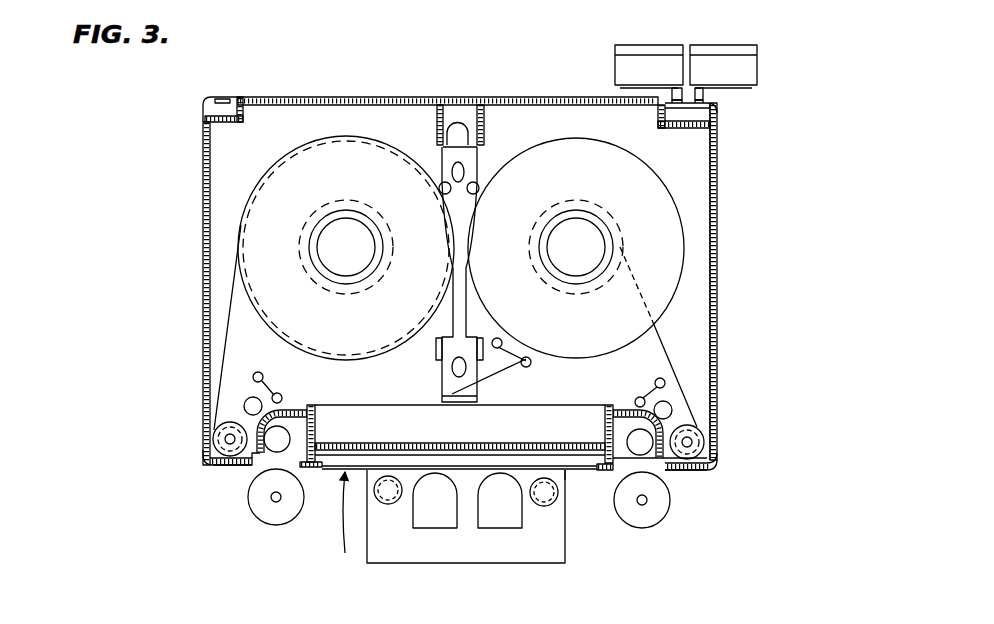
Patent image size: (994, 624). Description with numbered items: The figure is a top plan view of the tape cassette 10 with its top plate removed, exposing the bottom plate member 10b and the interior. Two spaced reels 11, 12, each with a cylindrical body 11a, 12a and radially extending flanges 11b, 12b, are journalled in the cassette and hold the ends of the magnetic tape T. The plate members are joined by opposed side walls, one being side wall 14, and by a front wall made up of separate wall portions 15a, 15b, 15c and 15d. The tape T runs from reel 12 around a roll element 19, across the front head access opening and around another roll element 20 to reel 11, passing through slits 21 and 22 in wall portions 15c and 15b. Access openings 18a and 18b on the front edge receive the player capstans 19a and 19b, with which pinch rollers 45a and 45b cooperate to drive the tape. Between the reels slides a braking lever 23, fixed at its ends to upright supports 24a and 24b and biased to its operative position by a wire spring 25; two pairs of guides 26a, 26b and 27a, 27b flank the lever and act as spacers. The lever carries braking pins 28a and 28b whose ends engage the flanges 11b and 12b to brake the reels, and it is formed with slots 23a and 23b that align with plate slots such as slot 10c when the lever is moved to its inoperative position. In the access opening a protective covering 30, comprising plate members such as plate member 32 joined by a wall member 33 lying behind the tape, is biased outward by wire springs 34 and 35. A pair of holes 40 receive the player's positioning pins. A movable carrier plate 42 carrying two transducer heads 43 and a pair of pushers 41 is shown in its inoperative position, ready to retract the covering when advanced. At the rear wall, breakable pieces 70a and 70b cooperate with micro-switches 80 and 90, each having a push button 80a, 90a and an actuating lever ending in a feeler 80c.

The cassette 10 is at (723, 173).
The bottom plate member 10b is at (403, 127).
The slot 10c is at (459, 122).
The reel 11 is at (670, 243).
The cylindrical body 11a is at (593, 206).
The flanges 11b is at (673, 204).
The reel 12 is at (256, 228).
The cylindrical body 12a is at (327, 207).
The flanges 12b is at (256, 183).
The side wall 14 is at (714, 267).
The magnetic tape T is at (658, 343).
The front wall portion 15a is at (695, 470).
The front wall portion 15b is at (604, 470).
The front wall portion 15c is at (312, 470).
The front wall portion 15d is at (228, 465).
The access opening 18a is at (670, 502).
The access opening 18b is at (262, 462).
The roll element 19 is at (214, 439).
The capstan 19a is at (638, 440).
The capstan 19b is at (278, 438).
The roll element 20 is at (707, 448).
The slit 21 is at (300, 462).
The slit 22 is at (632, 487).
The braking lever 23 is at (464, 215).
The slot 23a is at (473, 150).
The slot 23b is at (462, 355).
The upright support 24a is at (459, 404).
The upright support 24b is at (484, 125).
The wire spring 25 is at (523, 367).
The guide 26a is at (450, 150).
The guide 26b is at (478, 160).
The guide 27a is at (437, 350).
The guide 27b is at (484, 345).
The braking pin 28a is at (479, 188).
The braking pin 28b is at (439, 187).
The protective covering 30 is at (342, 528).
The plate member 32 is at (582, 470).
The wall member 33 is at (377, 447).
The wire spring 34 is at (254, 376).
The wire spring 35 is at (664, 382).
The holes 40 is at (244, 406).
The pushers 41 is at (388, 505).
The movable carrier plate 42 is at (455, 563).
The transducer heads 43 is at (498, 517).
The pinch roller 45a is at (662, 468).
The pinch roller 45b is at (250, 502).
The breakable piece 70a is at (712, 108).
The breakable piece 70b is at (668, 108).
The micro-switch 80 is at (735, 83).
The push button 80a is at (793, 31).
The feeler 80c is at (705, 92).
The micro-switch 90 is at (653, 85).
The push button 90a is at (640, 46).